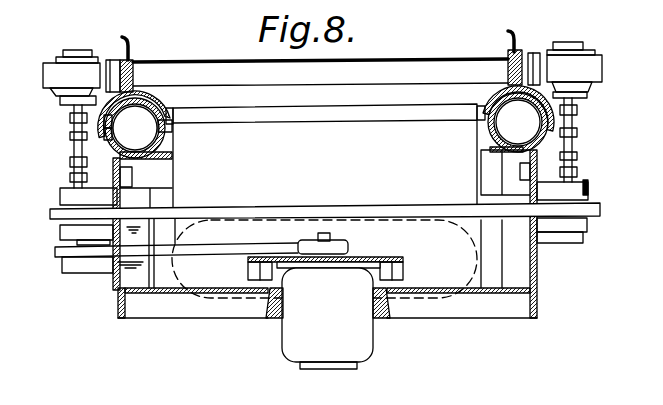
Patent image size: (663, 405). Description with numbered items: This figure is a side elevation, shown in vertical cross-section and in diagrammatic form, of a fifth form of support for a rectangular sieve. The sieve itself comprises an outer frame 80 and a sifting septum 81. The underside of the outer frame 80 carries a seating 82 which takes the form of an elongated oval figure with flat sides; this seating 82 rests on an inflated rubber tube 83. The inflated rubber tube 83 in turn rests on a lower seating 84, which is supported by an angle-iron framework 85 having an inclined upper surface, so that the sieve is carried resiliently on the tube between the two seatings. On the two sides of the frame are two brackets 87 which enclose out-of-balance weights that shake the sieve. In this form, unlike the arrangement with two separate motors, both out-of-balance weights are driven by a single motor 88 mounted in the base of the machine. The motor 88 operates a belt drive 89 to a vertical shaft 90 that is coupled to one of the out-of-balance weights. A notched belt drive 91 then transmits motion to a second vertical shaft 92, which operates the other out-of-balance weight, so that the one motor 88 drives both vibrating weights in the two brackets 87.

The outer frame 80 is at (143, 62).
The sifting septum 81 is at (227, 61).
The seating 82 is at (107, 110).
The inflated rubber tube 83 is at (105, 127).
The lower seating 84 is at (107, 138).
The angle-iron framework 85 is at (128, 231).
The brackets 87 is at (57, 72).
The motor 88 is at (343, 332).
The belt drive 89 is at (157, 250).
The vertical shaft 90 is at (61, 193).
The notched belt drive 91 is at (408, 214).
The second vertical shaft 92 is at (573, 175).